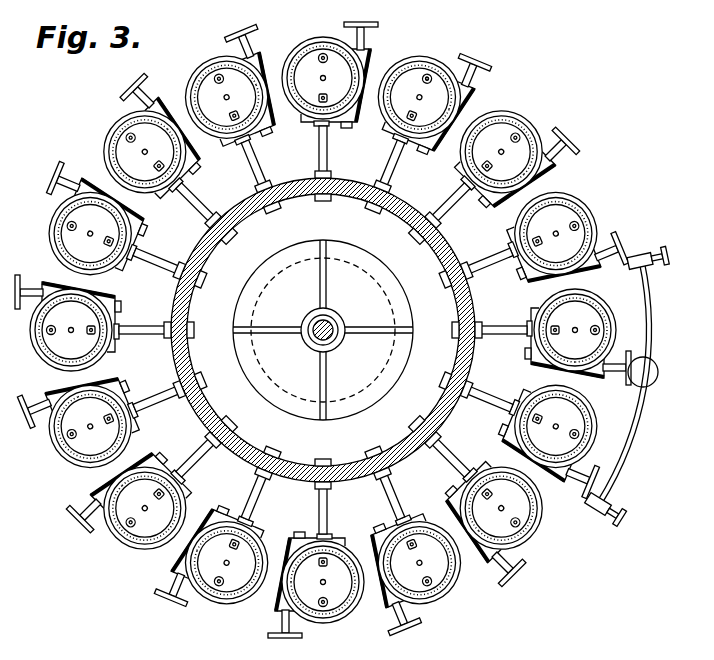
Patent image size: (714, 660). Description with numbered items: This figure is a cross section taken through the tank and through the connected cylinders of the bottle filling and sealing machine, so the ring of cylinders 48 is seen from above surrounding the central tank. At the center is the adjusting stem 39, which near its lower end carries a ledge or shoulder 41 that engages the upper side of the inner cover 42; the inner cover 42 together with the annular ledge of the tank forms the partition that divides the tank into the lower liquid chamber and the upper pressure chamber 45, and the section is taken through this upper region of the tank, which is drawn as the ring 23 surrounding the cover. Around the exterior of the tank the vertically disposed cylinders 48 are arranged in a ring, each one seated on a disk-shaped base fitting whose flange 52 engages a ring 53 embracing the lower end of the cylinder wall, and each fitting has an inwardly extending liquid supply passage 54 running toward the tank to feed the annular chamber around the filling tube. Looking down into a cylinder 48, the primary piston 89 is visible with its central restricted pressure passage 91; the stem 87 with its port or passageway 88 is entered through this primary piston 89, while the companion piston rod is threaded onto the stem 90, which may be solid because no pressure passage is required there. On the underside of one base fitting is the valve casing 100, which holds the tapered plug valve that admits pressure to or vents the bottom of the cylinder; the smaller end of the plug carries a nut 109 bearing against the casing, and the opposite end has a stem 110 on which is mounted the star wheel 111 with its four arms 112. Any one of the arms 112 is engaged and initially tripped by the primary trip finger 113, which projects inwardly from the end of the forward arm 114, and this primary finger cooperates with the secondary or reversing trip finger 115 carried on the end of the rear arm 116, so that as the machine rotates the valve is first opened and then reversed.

The annular rim 23 is at (305, 187).
The adjusting stem 39 is at (340, 323).
The ledge or shoulder 41 is at (336, 339).
The inner cover 42 is at (383, 278).
The pressure chamber 45 is at (323, 314).
The cylinders 48 is at (453, 114).
The flange 52 is at (432, 75).
The ring 53 is at (426, 73).
The liquid supply passage 54 is at (391, 170).
The stem 87 is at (468, 61).
The port or passageway 88 is at (470, 74).
The primary piston 89 is at (438, 111).
The stem 90 is at (410, 118).
The restricted pressure passage 91 is at (419, 97).
The valve casing 100 is at (135, 491).
The nut 109 is at (160, 459).
The stem 110 is at (101, 516).
The star wheel 111 is at (92, 515).
The arms 112 is at (79, 514).
The primary trip finger 113 is at (586, 503).
The forward arm 114 is at (630, 447).
The secondary or reversing trip finger 115 is at (622, 253).
The rear arm 116 is at (652, 305).